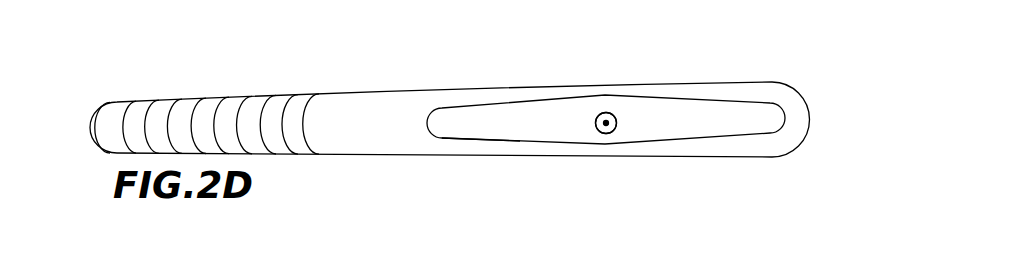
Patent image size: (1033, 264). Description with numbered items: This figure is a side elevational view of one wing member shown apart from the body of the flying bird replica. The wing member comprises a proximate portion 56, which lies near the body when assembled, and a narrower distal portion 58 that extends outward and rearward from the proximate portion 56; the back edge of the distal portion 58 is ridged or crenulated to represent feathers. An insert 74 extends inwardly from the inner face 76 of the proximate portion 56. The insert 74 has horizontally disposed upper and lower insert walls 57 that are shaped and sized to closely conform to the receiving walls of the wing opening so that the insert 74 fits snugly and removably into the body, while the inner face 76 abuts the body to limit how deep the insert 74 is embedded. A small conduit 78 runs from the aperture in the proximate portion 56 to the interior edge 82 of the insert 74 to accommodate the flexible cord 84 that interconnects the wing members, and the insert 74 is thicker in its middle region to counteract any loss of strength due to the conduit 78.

The proximate portion 56 is at (758, 82).
The distal portion 58 is at (215, 100).
The upper and lower insert walls 57 is at (518, 102).
The insert 74 is at (508, 140).
The inner face 76 is at (372, 121).
The conduit 78 is at (605, 133).
The interior edge 82 is at (672, 123).
The flexible cord 84 is at (608, 113).